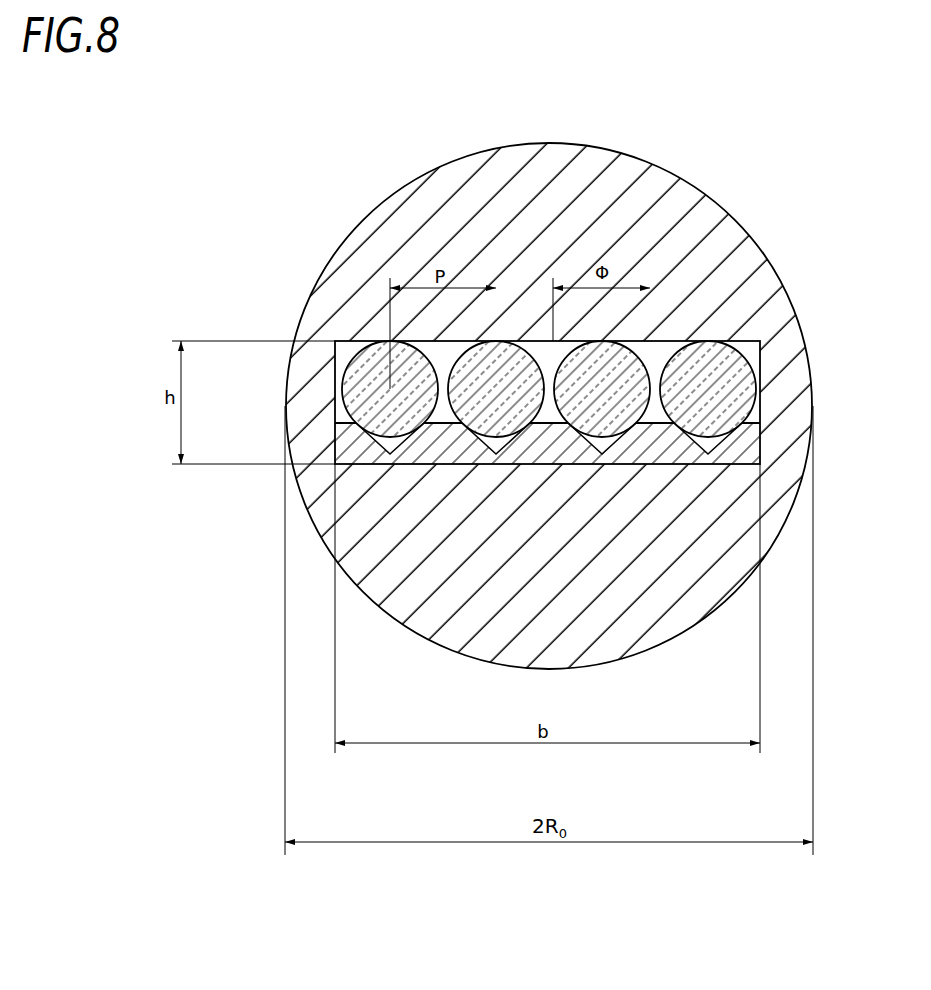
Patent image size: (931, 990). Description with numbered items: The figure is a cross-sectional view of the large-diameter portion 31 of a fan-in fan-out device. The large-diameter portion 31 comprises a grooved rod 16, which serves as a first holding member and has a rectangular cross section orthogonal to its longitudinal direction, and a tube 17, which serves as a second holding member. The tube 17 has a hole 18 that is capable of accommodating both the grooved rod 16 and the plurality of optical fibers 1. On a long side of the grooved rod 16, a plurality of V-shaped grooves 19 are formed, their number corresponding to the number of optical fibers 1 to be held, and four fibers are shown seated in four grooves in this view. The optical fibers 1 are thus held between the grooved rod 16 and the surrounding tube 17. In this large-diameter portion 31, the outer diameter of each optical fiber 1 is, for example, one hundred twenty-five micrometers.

The optical fiber 1 is at (352, 357).
The grooved rod 16 is at (760, 450).
The tube 17 is at (780, 540).
The hole 18 is at (665, 352).
The V-shaped groove 19 is at (388, 452).
The large-diameter portion 31 is at (683, 162).